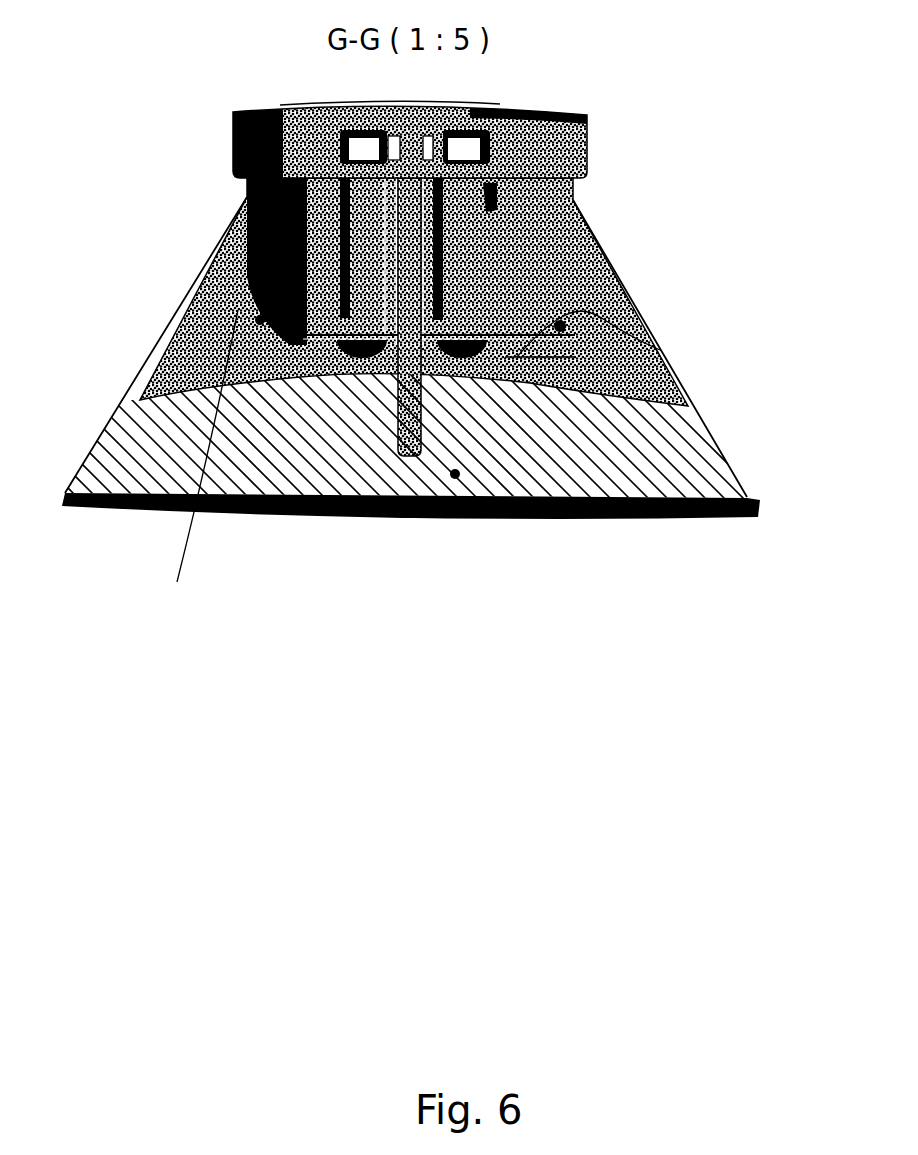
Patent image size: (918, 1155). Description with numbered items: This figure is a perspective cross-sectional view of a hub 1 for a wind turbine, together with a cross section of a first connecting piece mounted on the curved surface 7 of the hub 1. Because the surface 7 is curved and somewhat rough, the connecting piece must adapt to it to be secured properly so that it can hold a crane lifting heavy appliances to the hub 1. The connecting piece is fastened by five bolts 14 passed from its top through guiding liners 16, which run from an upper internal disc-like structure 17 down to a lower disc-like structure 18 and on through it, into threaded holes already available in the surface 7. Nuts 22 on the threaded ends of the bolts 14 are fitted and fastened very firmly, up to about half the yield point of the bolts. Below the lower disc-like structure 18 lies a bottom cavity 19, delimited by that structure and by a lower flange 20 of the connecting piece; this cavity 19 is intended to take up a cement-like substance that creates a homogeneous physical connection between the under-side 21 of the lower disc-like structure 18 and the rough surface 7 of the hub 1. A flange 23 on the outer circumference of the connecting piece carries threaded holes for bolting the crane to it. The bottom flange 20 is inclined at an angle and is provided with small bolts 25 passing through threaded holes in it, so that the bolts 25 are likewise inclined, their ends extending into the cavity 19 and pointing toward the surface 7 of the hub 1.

The hub 1 is at (605, 468).
The surface of the hub 7 is at (219, 343).
The bolts 14 is at (396, 462).
The guiding liners 16 is at (250, 185).
The upper internal disc-like structure 17 is at (503, 110).
The lower disc-like structure 18 is at (497, 347).
The bottom cavity 19 is at (328, 351).
The lower flange 20 is at (660, 350).
The under-side of the lower disc-like structure 21 is at (506, 357).
The nuts 22 is at (347, 133).
The flange 23 is at (585, 118).
The small bolts 25 is at (570, 383).